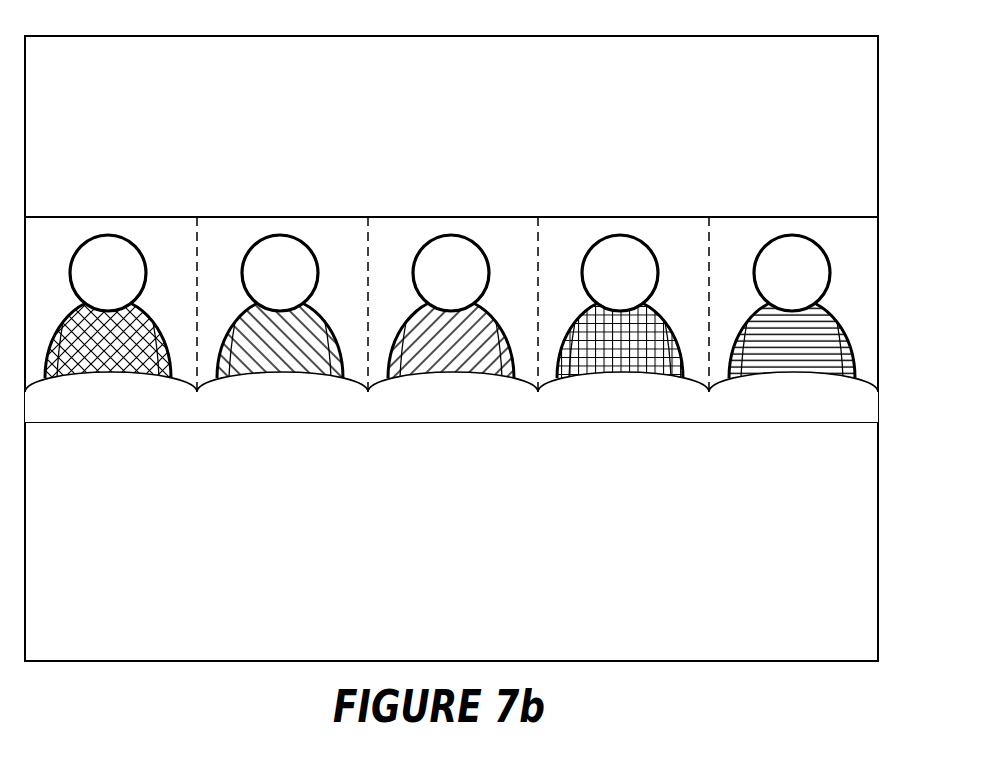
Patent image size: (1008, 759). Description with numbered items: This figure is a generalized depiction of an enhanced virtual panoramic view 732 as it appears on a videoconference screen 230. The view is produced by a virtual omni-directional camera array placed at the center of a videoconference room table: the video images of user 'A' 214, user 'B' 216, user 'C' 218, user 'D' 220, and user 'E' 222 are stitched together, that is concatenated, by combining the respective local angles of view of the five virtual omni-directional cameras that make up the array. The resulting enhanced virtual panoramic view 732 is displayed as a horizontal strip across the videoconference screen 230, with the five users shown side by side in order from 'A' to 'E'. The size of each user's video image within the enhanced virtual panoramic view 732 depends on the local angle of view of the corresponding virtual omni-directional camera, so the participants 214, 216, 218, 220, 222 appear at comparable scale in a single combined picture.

The videoconference screen 230 is at (75, 68).
The enhanced virtual panoramic view 732 is at (513, 217).
The user 'A' 214 is at (99, 413).
The user 'B' 216 is at (271, 413).
The user 'C' 218 is at (442, 413).
The user 'D' 220 is at (611, 413).
The user 'E' 222 is at (783, 413).